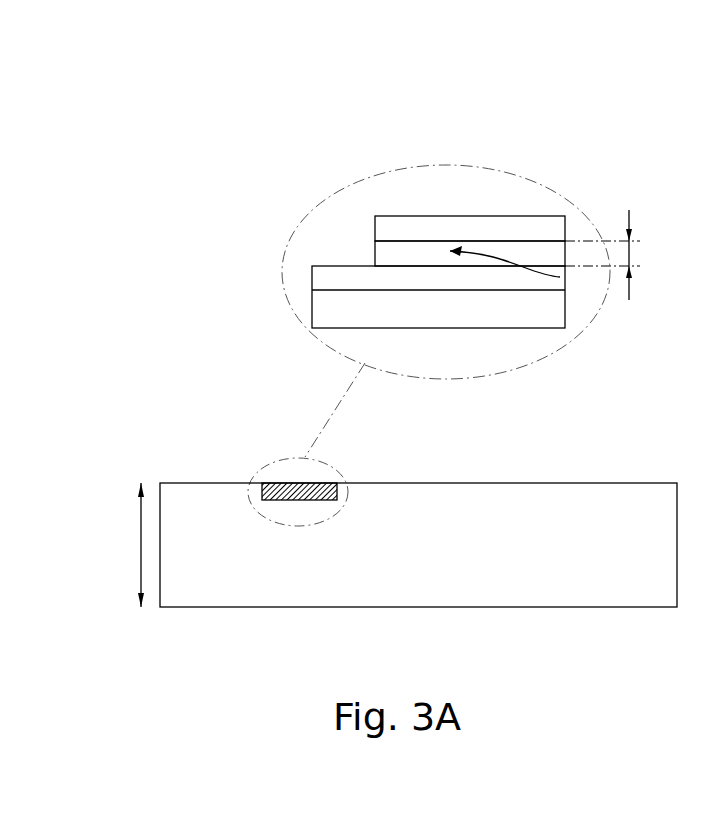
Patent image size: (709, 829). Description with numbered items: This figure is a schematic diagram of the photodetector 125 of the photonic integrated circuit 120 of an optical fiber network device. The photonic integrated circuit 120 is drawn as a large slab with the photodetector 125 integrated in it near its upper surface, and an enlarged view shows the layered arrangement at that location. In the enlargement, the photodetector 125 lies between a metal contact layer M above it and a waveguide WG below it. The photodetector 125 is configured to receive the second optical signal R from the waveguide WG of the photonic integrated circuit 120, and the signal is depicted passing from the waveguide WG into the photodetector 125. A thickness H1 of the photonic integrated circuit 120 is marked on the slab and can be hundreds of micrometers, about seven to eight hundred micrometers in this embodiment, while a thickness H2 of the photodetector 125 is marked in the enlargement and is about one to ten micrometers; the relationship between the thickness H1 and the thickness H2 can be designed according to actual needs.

The photonic integrated circuit 120 is at (643, 580).
The photodetector 125 is at (348, 483).
The metal contact layer M is at (378, 218).
The waveguide WG is at (315, 275).
The second optical signal R is at (493, 257).
The thickness of the photonic integrated circuit H1 is at (124, 545).
The thickness of the photodetector H2 is at (623, 255).